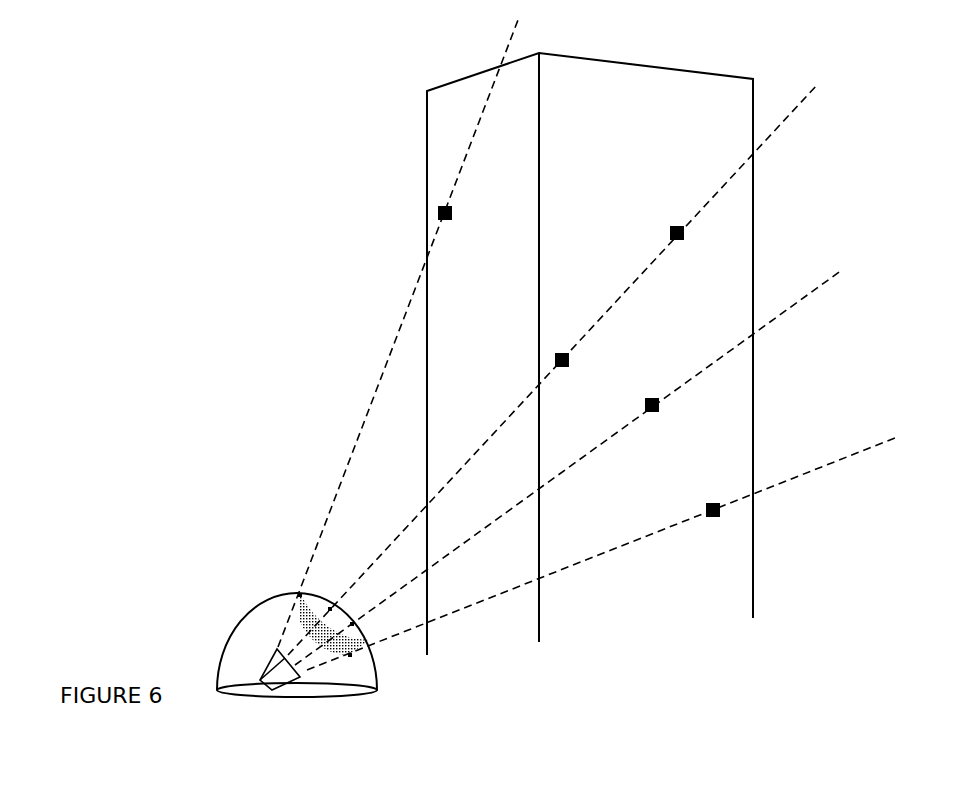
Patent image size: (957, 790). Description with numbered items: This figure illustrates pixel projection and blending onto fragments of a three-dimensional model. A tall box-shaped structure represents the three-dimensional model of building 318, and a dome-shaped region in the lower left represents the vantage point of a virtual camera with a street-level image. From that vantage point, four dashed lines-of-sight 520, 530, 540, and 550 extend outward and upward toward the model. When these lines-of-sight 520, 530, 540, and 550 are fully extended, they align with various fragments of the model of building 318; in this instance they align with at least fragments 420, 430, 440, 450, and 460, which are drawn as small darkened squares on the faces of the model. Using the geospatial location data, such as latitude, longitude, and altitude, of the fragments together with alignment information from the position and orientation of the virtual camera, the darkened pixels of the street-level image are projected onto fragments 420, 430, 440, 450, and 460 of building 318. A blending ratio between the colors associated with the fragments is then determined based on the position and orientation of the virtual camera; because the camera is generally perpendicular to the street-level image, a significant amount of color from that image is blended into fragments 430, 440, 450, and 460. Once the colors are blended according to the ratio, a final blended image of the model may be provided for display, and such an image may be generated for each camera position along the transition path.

The building 318 is at (425, 108).
The fragment 420 is at (466, 223).
The fragment 430 is at (558, 346).
The fragment 440 is at (658, 227).
The fragment 450 is at (646, 392).
The fragment 460 is at (713, 496).
The line-of-sight 520 is at (507, 45).
The line-of-sight 530 is at (773, 132).
The line-of-sight 540 is at (803, 302).
The line-of-sight 550 is at (852, 457).